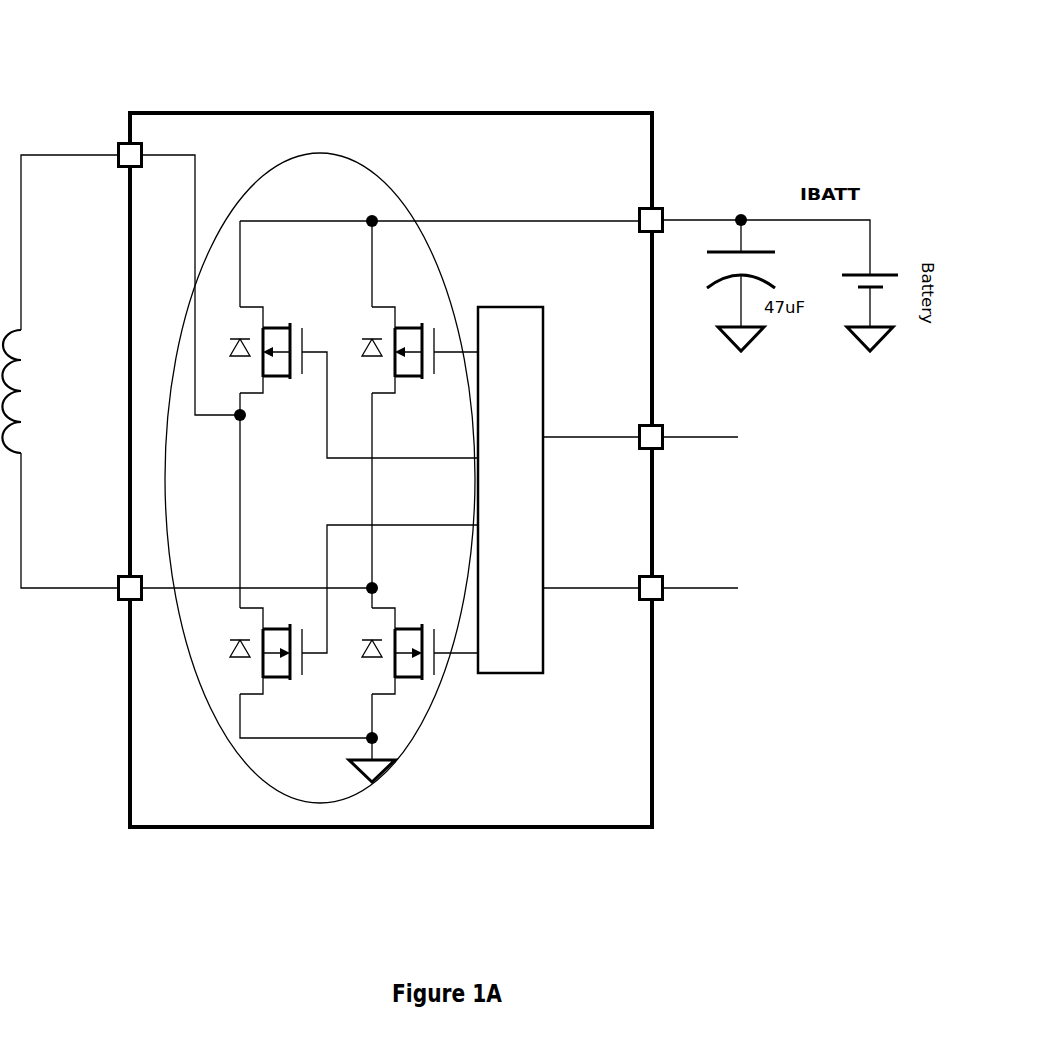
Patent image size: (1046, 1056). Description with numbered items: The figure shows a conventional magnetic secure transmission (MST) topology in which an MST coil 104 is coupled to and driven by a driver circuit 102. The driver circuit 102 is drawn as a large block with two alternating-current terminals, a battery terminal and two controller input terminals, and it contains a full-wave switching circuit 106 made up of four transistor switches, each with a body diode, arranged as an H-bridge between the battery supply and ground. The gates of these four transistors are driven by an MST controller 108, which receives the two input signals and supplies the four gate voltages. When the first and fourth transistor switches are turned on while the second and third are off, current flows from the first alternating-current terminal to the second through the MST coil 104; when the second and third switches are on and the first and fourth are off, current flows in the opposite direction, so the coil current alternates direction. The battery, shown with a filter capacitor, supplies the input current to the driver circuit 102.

The driver circuit 102 is at (445, 125).
The MST coil 104 is at (21, 330).
The full-wave switching circuit 106 is at (177, 620).
The MST controller 108 is at (543, 647).